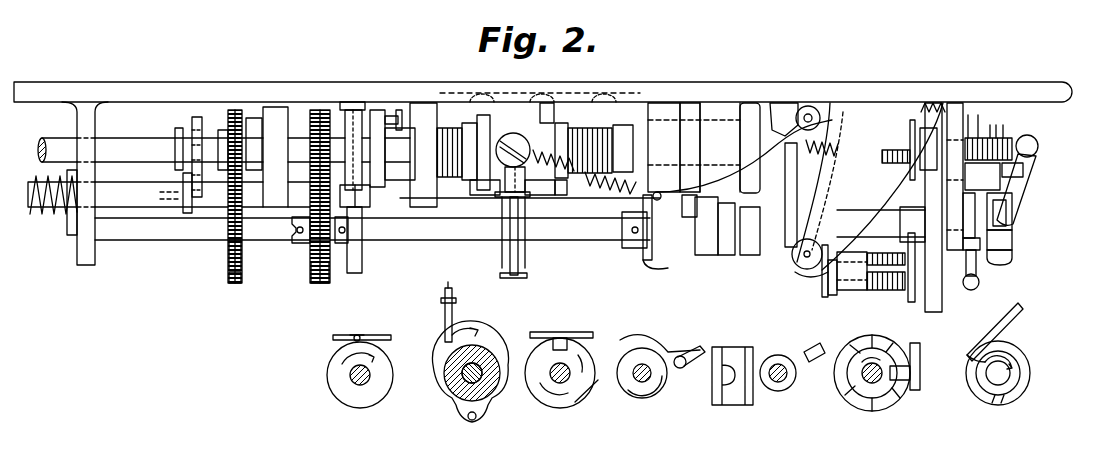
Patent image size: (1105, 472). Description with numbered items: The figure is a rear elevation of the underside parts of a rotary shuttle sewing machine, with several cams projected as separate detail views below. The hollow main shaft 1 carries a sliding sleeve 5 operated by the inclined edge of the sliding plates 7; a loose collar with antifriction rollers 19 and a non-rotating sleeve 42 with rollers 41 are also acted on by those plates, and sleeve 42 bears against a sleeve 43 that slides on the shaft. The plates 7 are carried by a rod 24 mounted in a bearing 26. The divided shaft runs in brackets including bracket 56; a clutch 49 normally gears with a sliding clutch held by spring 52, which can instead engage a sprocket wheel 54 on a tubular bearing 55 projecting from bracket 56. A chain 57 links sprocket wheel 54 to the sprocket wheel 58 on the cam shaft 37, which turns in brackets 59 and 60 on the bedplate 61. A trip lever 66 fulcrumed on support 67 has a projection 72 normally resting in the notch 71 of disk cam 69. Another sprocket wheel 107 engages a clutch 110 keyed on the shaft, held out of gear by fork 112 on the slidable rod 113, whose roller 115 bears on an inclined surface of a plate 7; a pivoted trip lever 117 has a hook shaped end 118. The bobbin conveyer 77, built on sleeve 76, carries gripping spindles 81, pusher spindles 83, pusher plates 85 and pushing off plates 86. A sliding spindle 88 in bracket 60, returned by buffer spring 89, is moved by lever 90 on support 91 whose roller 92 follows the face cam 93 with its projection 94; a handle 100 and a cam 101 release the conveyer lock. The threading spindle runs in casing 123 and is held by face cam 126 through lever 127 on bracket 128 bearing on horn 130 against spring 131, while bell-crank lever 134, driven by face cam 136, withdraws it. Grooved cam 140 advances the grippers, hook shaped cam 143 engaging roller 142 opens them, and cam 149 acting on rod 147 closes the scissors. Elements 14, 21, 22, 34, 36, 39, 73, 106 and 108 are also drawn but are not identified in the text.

The main or shuttle shaft 1 is at (191, 150).
The sliding sleeve 5 is at (562, 127).
The sliding plates 7 is at (497, 196).
The spring 14 is at (50, 218).
The antifriction rollers 19 is at (546, 102).
The spring 21 is at (594, 130).
The block 22 is at (624, 125).
The rod 24 is at (508, 144).
The bearing 26 is at (524, 102).
The rod 34 is at (486, 268).
The cam 36 is at (475, 341).
The cam shaft 37 is at (597, 227).
The foot 39 is at (477, 412).
The anti-friction rollers 41 is at (504, 142).
The sleeve 42 is at (412, 155).
The sleeve 43 is at (465, 168).
The clutch 49 is at (380, 118).
The spring 52 is at (350, 120).
The sprocket wheel 54 is at (313, 136).
The tubular bearing 55 is at (252, 136).
The bracket 56 is at (275, 157).
The chain 57 is at (311, 242).
The sprocket wheel 58 is at (312, 264).
The bracket 59 is at (84, 250).
The bracket 60 is at (945, 208).
The bedplate 61 is at (543, 92).
The trip lever 66 is at (356, 236).
The support 67 is at (358, 204).
The cam 69 is at (359, 336).
The notch 71 is at (340, 334).
The projection 72 is at (357, 334).
The bracket 73 is at (934, 103).
The sleeve 76 is at (881, 222).
The bobbin conveyer 77 is at (856, 282).
The gripping spindle 81 is at (831, 285).
The pusher spindle 83 is at (890, 283).
The pusher plate 85 is at (913, 290).
The pushing off plate 86 is at (822, 283).
The sliding spindle 88 is at (978, 152).
The buffer spring 89 is at (1012, 142).
The lever 90 is at (1038, 148).
The support 91 is at (1024, 170).
The anti-friction roller 92 is at (1008, 224).
The face cam 93 is at (1012, 240).
The projection 94 is at (1008, 260).
The handle 100 is at (979, 283).
The cam 101 is at (980, 236).
The wheel 106 is at (232, 266).
The sprocket wheel 107 is at (233, 118).
The wheel rim 108 is at (232, 282).
The clutch 110 is at (190, 126).
The fork 112 is at (186, 212).
The slidable rod 113 is at (169, 194).
The anti-friction roller 115 is at (560, 196).
The trip lever 117 is at (783, 200).
The hook shaped end 118 is at (612, 200).
The casing 123 is at (810, 106).
The face cam 126 is at (888, 396).
The lever 127 is at (824, 138).
The bracket 128 is at (856, 160).
The horn 130 is at (776, 104).
The spiral spring 131 is at (944, 104).
The bell-crank lever 134 is at (713, 188).
The face cam 136 is at (575, 400).
The grooved cam 140 is at (731, 347).
The anti-friction roller 142 is at (682, 370).
The hook shaped cam 143 is at (653, 343).
The sliding rod 147 is at (810, 350).
The cam 149 is at (778, 390).